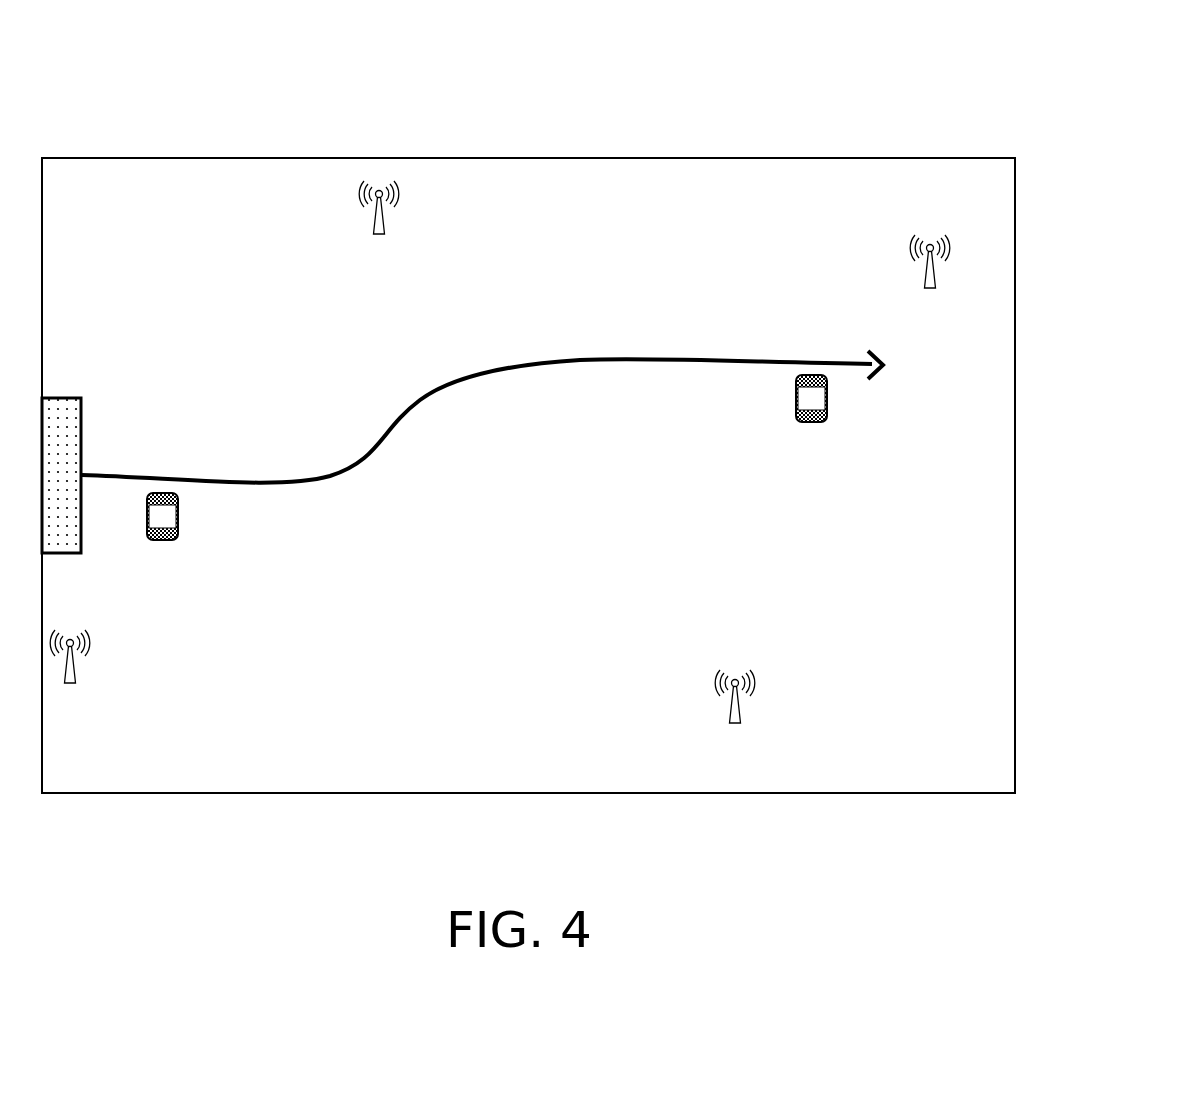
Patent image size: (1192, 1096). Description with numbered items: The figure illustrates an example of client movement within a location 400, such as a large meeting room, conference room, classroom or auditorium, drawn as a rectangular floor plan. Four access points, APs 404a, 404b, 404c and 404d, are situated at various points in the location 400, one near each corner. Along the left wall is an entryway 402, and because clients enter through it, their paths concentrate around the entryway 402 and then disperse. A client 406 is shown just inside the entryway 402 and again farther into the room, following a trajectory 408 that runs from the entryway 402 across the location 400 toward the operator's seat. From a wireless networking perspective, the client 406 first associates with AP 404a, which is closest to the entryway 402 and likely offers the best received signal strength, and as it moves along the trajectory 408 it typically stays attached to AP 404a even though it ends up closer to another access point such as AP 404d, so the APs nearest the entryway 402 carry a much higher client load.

The location 400 is at (1069, 66).
The entryway 402 is at (93, 406).
The AP 404a is at (99, 665).
The AP 404b is at (409, 217).
The AP 404c is at (764, 705).
The AP 404d is at (958, 270).
The client 406 is at (181, 557).
The trajectory 408 is at (493, 388).